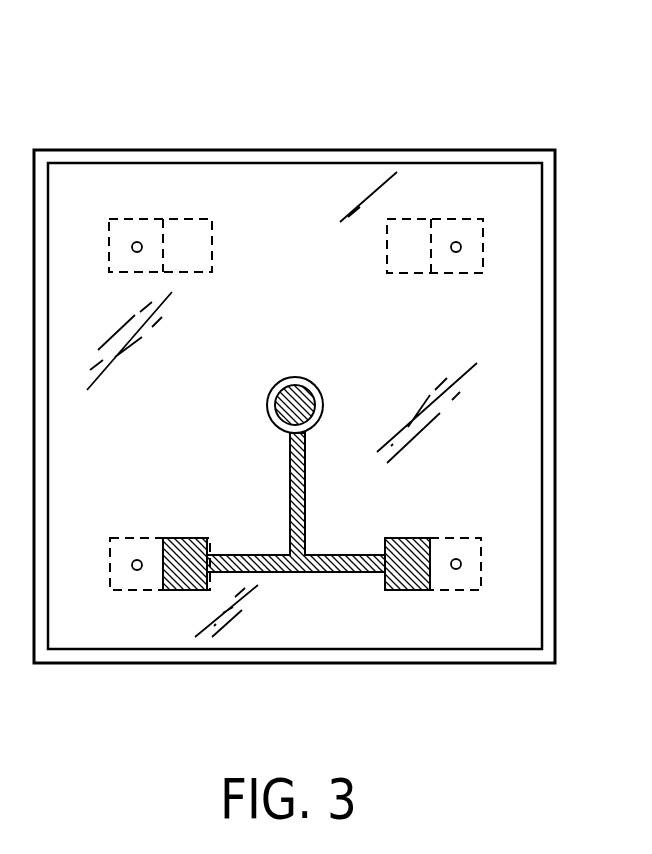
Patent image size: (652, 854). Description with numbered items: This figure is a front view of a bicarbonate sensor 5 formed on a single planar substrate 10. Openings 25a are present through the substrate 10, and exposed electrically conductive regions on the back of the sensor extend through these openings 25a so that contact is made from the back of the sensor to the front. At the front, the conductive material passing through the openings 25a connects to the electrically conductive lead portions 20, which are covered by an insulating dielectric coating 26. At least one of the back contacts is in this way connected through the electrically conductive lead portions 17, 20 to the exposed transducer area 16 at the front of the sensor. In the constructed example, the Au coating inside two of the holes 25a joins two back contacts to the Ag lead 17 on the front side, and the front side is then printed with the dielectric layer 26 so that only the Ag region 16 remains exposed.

The bicarbonate sensor 5 is at (394, 102).
The substrate 10 is at (95, 157).
The insulating dielectric coating 26 is at (262, 220).
The electrically conductive lead portions 20 is at (462, 222).
The openings 25a is at (462, 247).
The electrically conductive lead portion 17 is at (325, 575).
The exposed transducer area 16 is at (269, 408).